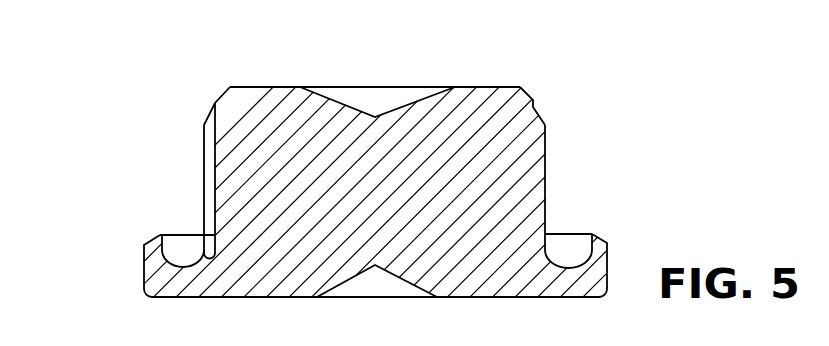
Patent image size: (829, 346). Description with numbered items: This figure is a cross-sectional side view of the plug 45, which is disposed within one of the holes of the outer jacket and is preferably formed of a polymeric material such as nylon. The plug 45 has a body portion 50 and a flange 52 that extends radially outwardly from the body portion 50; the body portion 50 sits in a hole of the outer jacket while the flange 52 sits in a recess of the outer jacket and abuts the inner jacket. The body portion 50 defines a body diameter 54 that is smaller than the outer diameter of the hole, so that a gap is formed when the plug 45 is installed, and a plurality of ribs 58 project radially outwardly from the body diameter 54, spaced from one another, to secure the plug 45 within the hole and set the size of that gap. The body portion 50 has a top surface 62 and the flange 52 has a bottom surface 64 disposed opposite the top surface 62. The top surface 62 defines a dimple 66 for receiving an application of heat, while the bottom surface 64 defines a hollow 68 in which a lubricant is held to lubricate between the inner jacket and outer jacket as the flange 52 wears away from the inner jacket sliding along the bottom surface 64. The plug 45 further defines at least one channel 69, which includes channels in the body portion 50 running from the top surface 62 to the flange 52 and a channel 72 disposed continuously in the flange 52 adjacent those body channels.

The plug 45 is at (602, 70).
The body portion 50 is at (537, 170).
The flange 52 is at (147, 290).
The body diameter 54 is at (213, 100).
The ribs 58 is at (204, 125).
The top surface 62 is at (490, 85).
The bottom surface 64 is at (522, 297).
The dimple 66 is at (357, 95).
The hollow 68 is at (358, 292).
The channel 69 is at (190, 213).
The channel 72 is at (563, 240).